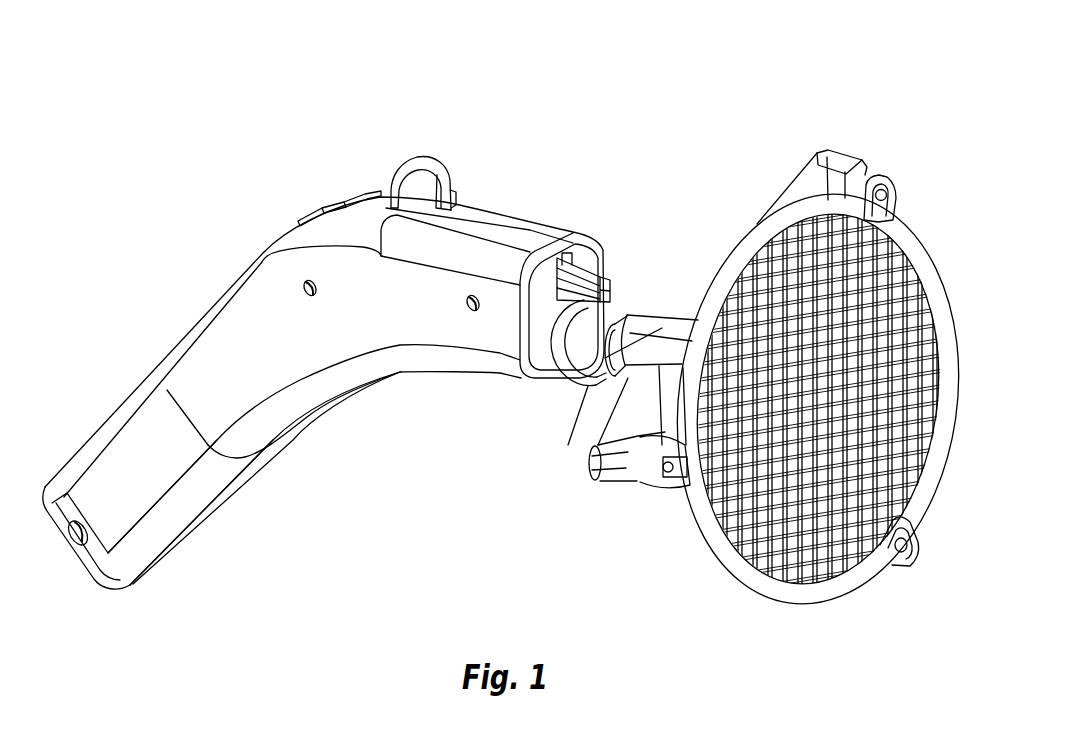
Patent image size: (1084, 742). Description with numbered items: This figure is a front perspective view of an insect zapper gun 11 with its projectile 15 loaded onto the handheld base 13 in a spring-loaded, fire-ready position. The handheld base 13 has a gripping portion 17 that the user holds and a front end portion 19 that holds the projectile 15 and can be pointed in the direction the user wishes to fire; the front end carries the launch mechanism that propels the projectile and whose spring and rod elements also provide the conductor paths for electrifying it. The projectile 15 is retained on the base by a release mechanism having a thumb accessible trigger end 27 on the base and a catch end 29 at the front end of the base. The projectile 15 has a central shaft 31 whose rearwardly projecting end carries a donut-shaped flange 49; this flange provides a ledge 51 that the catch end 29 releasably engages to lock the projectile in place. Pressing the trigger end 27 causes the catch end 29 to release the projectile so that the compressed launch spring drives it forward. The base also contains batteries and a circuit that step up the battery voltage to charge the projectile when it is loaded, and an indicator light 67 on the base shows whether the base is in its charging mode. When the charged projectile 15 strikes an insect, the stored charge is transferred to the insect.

The insect zapper gun 11 is at (530, 132).
The handheld base 13 is at (240, 277).
The projectile 15 is at (921, 240).
The gripping portion 17 is at (213, 473).
The front end portion 19 is at (589, 250).
The trigger end 27 is at (400, 160).
The catch end 29 is at (607, 297).
The central shaft 31 is at (588, 386).
The donut-shaped flange 49 is at (577, 387).
The ledge 51 is at (577, 379).
The indicator light 67 is at (348, 196).